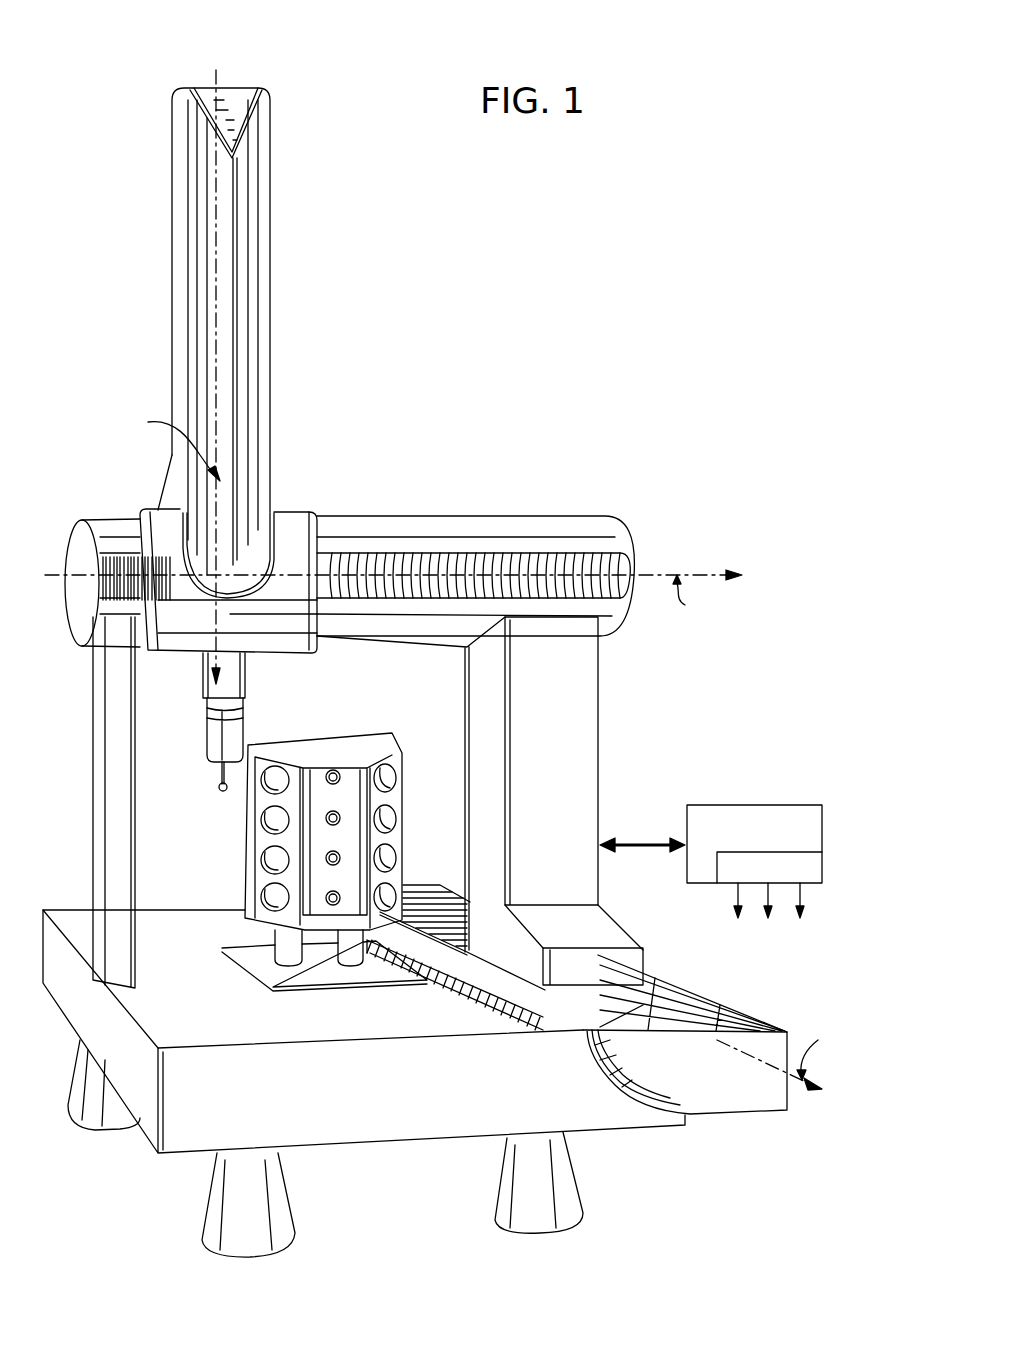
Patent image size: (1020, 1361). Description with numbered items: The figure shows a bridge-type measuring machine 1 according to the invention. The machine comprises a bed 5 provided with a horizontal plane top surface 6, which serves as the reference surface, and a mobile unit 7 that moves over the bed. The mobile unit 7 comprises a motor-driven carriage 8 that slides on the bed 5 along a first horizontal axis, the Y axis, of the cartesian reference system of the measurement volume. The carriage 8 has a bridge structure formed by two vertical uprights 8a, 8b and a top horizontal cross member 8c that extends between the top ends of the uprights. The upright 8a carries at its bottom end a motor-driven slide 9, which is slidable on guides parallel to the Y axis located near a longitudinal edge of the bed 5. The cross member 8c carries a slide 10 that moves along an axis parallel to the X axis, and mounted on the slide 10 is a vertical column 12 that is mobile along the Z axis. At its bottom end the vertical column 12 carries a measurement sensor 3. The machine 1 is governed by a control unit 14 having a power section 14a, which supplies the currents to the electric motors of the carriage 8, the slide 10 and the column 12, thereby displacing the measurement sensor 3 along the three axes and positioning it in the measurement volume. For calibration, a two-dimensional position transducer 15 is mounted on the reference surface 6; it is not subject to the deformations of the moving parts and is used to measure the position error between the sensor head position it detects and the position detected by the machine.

The measuring machine 1 is at (349, 480).
The measurement sensor 3 is at (218, 788).
The bed 5 is at (85, 993).
The top surface 6 is at (81, 928).
The mobile unit 7 is at (613, 513).
The carriage 8 is at (647, 771).
The vertical upright 8a is at (590, 752).
The vertical upright 8b is at (117, 710).
The cross member 8c is at (417, 530).
The slide 9 is at (639, 963).
The slide 10 is at (290, 525).
The vertical column 12 is at (240, 678).
The control unit 14 is at (743, 815).
The power section 14a is at (812, 863).
The two-dimensional position transducer 15 is at (540, 1035).